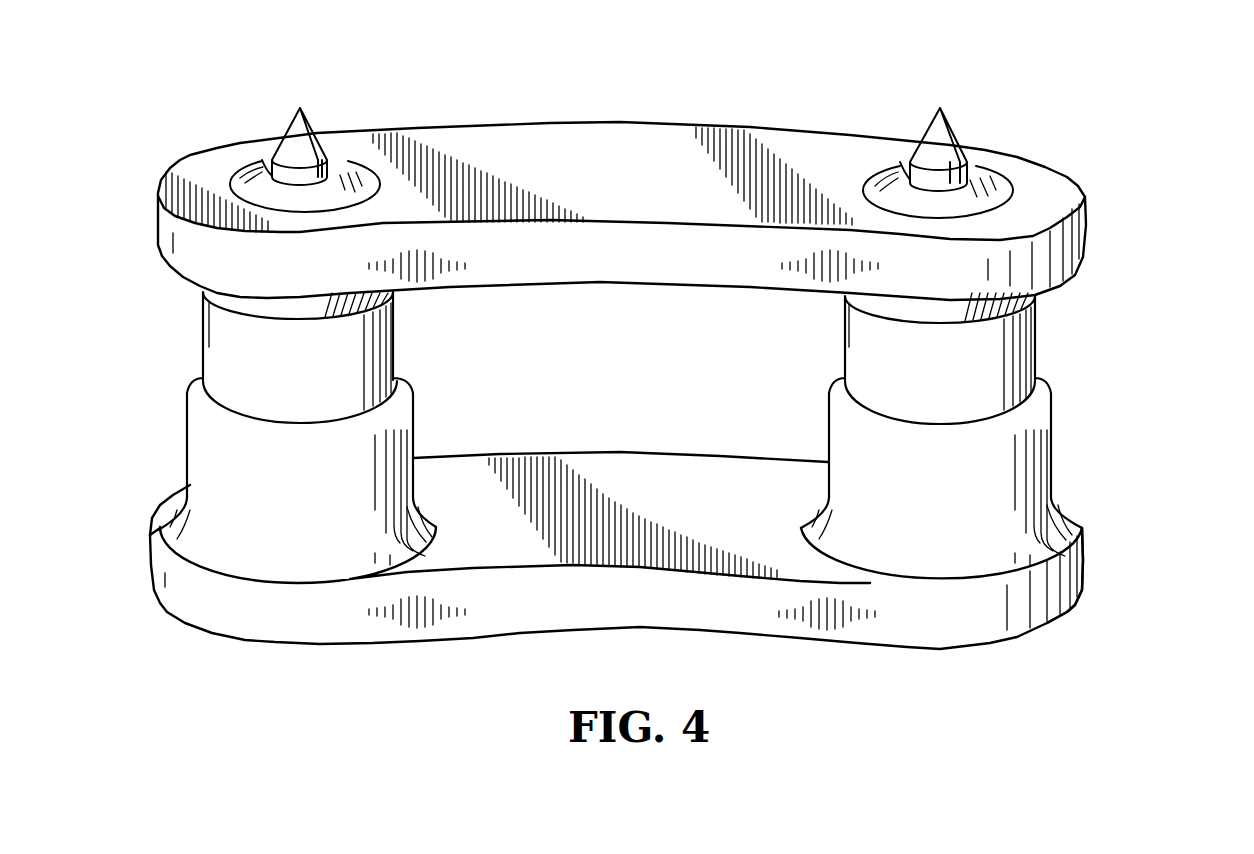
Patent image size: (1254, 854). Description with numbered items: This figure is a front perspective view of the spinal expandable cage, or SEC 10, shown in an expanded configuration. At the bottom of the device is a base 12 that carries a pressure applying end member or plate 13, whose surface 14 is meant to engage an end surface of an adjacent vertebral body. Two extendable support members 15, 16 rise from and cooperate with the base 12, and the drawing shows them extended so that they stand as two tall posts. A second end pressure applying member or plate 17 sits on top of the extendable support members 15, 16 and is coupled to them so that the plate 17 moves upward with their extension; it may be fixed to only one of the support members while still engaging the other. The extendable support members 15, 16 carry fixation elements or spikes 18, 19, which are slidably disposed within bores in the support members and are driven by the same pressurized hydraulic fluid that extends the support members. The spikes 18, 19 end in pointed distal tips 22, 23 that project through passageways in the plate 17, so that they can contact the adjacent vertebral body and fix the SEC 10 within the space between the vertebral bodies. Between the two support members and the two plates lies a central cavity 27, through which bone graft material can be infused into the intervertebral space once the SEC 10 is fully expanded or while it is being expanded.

The SEC 10 is at (1116, 131).
The base 12 is at (1074, 574).
The pressure applying end member or plate 13 is at (620, 476).
The surface 14 is at (207, 630).
The extendable support member 15 is at (203, 342).
The extendable support member 16 is at (1037, 328).
The second end pressure applying member or plate 17 is at (614, 138).
The fixation element or spike 18 is at (262, 158).
The fixation element or spike 19 is at (967, 167).
The pointed distal tip 22 is at (301, 108).
The pointed distal tip 23 is at (940, 108).
The central cavity 27 is at (626, 358).